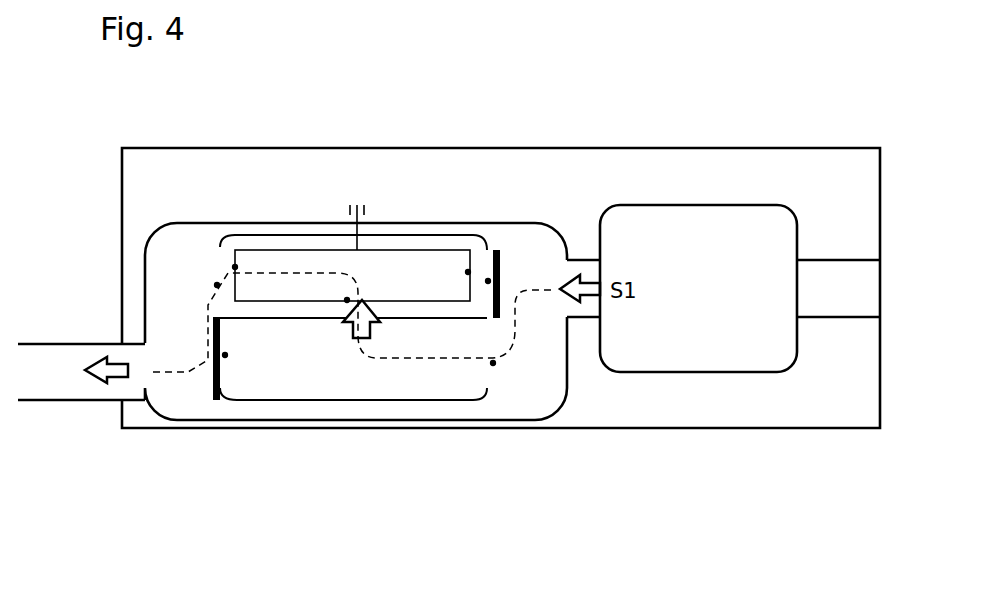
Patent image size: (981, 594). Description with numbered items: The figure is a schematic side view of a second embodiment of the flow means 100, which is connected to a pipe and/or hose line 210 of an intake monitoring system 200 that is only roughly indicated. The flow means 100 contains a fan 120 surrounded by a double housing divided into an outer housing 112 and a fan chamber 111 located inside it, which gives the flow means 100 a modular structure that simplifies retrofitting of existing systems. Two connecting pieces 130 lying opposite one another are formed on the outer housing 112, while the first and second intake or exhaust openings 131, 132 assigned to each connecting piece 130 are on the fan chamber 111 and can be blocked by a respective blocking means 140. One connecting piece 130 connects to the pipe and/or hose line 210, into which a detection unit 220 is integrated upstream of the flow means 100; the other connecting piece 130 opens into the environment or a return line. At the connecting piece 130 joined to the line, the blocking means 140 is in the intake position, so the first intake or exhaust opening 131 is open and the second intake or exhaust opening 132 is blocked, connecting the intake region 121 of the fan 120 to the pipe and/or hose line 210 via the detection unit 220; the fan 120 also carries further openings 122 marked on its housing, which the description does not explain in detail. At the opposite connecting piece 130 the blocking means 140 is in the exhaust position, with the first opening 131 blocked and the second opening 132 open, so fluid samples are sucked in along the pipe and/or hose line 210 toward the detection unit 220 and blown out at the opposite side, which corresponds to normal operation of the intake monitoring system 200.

The flow means 100 is at (356, 214).
The intake monitoring system 200 is at (501, 219).
The pipe and/or hose line 210 is at (867, 185).
The detection unit 220 is at (728, 212).
The fan chamber 111 is at (353, 374).
The outer housing 112 is at (356, 466).
The fan 120 is at (352, 177).
The intake region 121 is at (388, 406).
The side openings 122 is at (405, 164).
The connecting piece 130 is at (344, 283).
The first intake or exhaust opening 131 is at (375, 433).
The second intake or exhaust opening 132 is at (303, 396).
The blocking means 140 is at (438, 315).